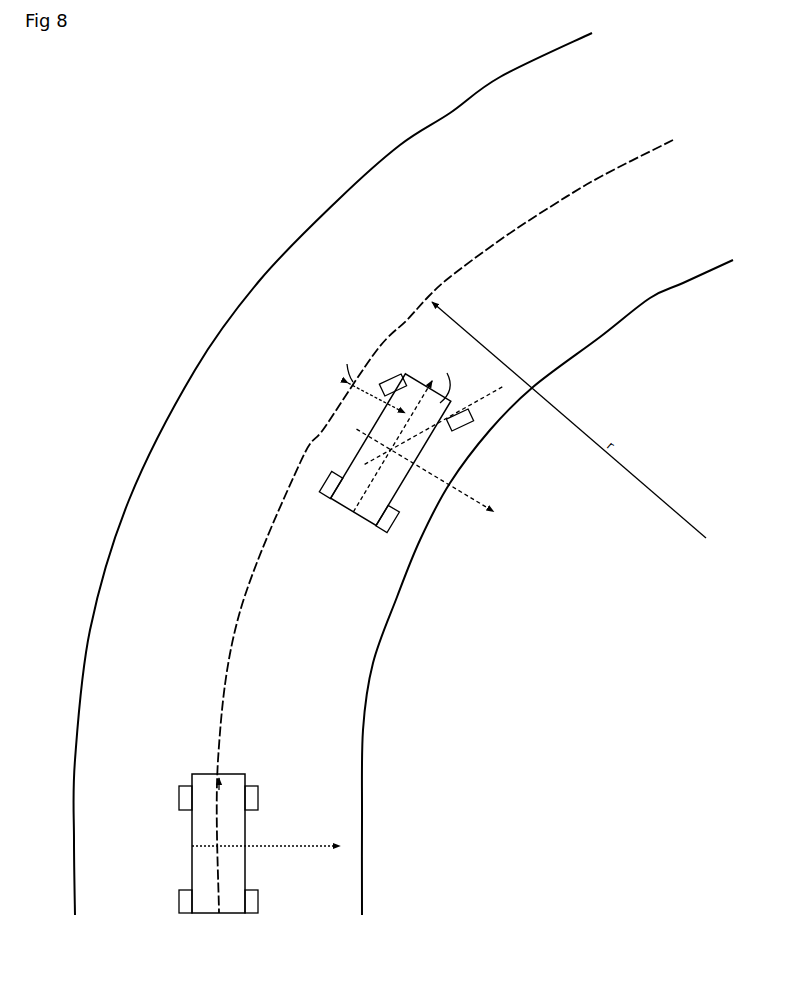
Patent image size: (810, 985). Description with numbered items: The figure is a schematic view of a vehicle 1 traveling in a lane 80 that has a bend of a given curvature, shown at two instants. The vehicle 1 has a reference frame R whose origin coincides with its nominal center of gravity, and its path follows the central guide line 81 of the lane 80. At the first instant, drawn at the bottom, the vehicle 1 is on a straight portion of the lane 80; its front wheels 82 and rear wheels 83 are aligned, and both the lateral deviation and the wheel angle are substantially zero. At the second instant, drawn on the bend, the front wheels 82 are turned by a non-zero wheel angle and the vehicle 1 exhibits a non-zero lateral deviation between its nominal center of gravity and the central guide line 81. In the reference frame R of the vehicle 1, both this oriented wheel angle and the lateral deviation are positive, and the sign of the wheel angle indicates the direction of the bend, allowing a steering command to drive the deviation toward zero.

The vehicle 1 is at (205, 917).
The lane 80 is at (358, 175).
The central guide line 81 is at (541, 207).
The front wheels 82 is at (263, 793).
The rear wheels 83 is at (263, 910).